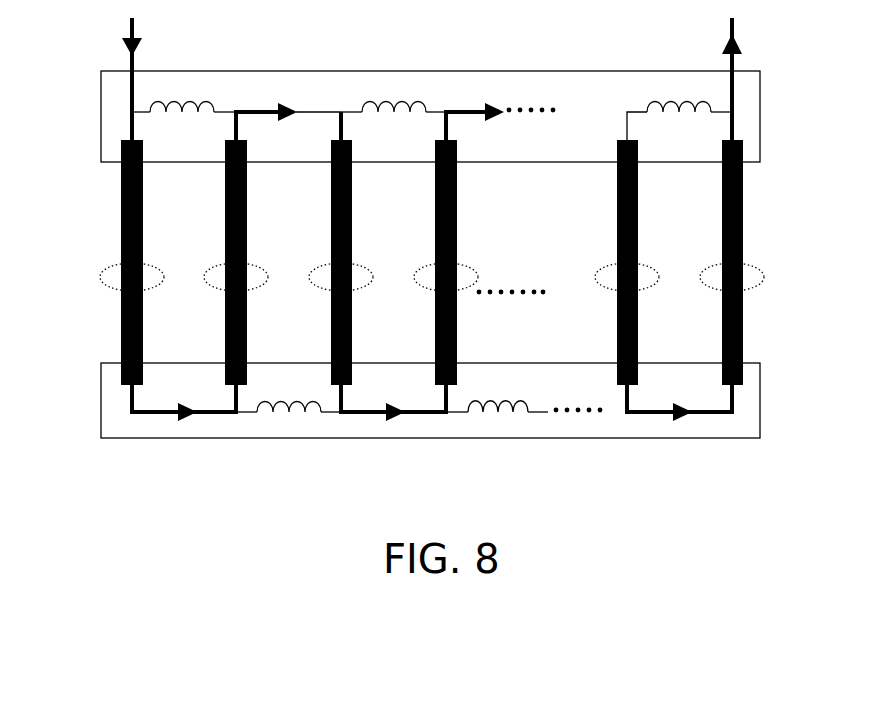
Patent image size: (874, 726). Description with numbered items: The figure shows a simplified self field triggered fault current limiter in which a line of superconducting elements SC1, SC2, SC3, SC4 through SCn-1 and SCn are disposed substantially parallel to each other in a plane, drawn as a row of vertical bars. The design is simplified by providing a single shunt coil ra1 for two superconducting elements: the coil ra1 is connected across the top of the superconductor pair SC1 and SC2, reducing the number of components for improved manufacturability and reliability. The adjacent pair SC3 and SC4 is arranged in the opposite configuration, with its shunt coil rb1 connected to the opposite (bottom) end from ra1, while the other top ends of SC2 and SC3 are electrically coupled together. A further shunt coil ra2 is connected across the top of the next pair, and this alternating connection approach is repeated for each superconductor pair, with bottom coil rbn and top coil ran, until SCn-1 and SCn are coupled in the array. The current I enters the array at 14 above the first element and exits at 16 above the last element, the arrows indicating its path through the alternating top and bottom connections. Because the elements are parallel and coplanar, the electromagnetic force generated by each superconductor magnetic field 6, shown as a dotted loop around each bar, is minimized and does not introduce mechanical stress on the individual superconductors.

The current entry point 14 is at (127, 30).
The current exit point 16 is at (736, 25).
The superconductor magnetic field 6 is at (100, 273).
The superconducting element SC1 is at (121, 318).
The superconducting element SC2 is at (248, 247).
The superconducting element SC3 is at (353, 247).
The superconducting element SC4 is at (458, 247).
The superconducting element SCn-1 is at (639, 247).
The superconducting element SCn is at (744, 247).
The shunt coil ra1 is at (176, 100).
The shunt coil ra2 is at (385, 100).
The shunt coil ran is at (673, 100).
The shunt coil rb1 is at (290, 415).
The shunt coil rbn is at (495, 415).